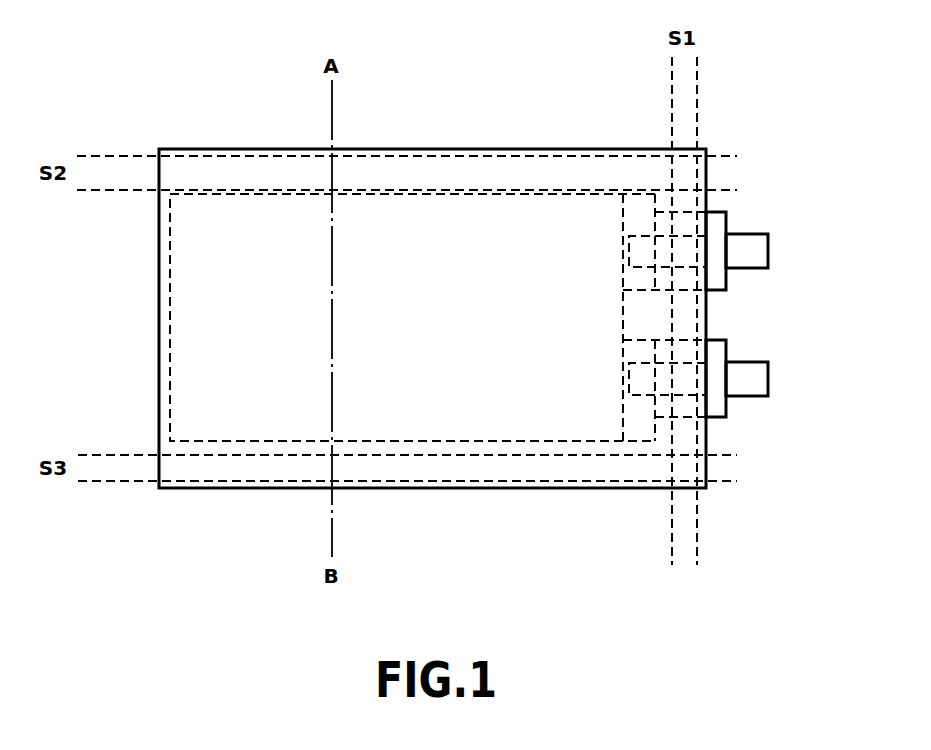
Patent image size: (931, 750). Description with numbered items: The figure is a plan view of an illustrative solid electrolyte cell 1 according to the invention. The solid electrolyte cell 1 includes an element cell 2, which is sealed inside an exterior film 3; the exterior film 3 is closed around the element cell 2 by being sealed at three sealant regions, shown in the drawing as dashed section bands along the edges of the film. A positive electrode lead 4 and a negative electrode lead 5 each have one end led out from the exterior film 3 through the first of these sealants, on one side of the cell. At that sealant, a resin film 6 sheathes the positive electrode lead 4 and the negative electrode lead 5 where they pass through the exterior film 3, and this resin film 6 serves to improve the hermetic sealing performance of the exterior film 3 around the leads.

The solid electrolyte cell 1 is at (205, 62).
The element cell 2 is at (394, 425).
The exterior film 3 is at (532, 478).
The positive electrode lead 4 is at (753, 246).
The negative electrode lead 5 is at (753, 381).
The resin film 6 is at (715, 277).